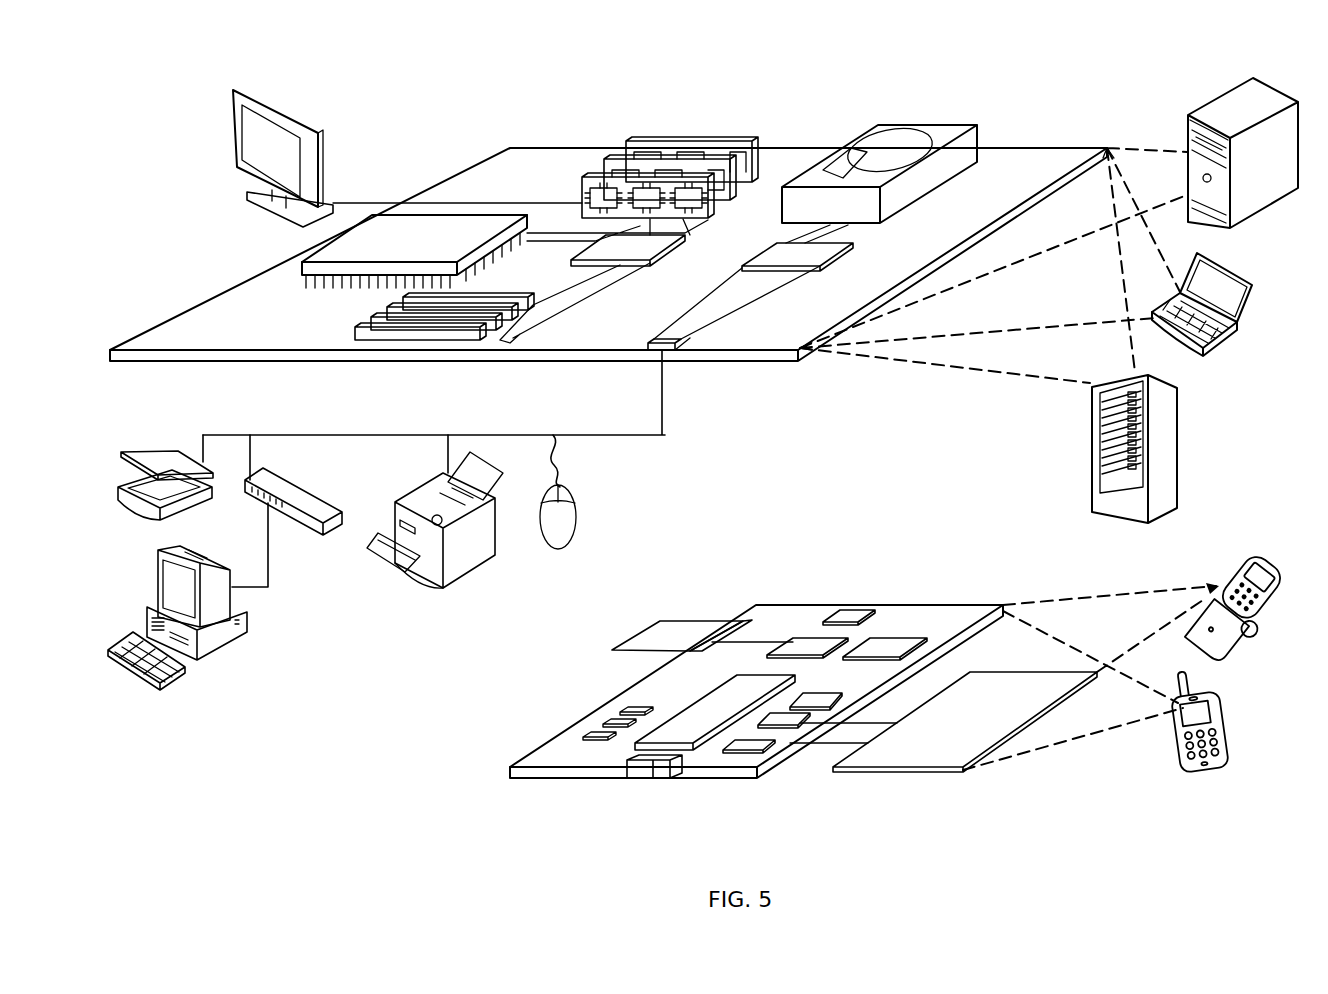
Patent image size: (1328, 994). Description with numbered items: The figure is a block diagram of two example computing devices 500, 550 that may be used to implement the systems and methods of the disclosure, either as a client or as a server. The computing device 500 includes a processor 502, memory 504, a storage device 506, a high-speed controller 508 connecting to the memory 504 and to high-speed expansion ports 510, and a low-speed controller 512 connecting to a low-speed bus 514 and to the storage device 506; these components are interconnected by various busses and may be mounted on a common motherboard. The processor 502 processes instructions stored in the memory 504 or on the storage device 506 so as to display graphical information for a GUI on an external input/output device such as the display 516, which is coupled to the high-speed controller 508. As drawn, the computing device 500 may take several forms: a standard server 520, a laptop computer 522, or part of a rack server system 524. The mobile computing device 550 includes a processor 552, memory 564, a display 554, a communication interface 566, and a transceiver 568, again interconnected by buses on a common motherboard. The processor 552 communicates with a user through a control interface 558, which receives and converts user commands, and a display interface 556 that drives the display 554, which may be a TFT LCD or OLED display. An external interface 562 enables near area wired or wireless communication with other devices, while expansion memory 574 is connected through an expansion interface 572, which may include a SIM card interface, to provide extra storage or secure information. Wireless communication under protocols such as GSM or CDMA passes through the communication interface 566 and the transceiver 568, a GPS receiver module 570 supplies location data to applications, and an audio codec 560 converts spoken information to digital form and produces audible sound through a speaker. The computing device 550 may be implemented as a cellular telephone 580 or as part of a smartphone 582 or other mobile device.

The computing device 500 is at (142, 98).
The processor 502 is at (310, 264).
The memory 504 is at (636, 138).
The storage device 506 is at (872, 132).
The high-speed controller 508 is at (603, 248).
The high-speed expansion ports 510 is at (380, 321).
The low-speed controller 512 is at (778, 250).
The low-speed bus 514 is at (672, 352).
The display 516 is at (237, 92).
The standard server 520 is at (1187, 133).
The laptop computer 522 is at (1254, 283).
The rack server system 524 is at (1092, 475).
The computing device 550 is at (480, 783).
The processor 552 is at (688, 733).
The display 554 is at (927, 753).
The display interface 556 is at (758, 745).
The control interface 558 is at (787, 720).
The audio codec 560 is at (817, 700).
The external interface 562 is at (657, 768).
The memory 564 is at (616, 722).
The communication interface 566 is at (810, 645).
The transceiver 568 is at (887, 643).
The GPS receiver module 570 is at (858, 611).
The expansion interface 572 is at (734, 620).
The expansion memory 574 is at (660, 620).
The cellular telephone 580 is at (1236, 562).
The smartphone 582 is at (1172, 733).